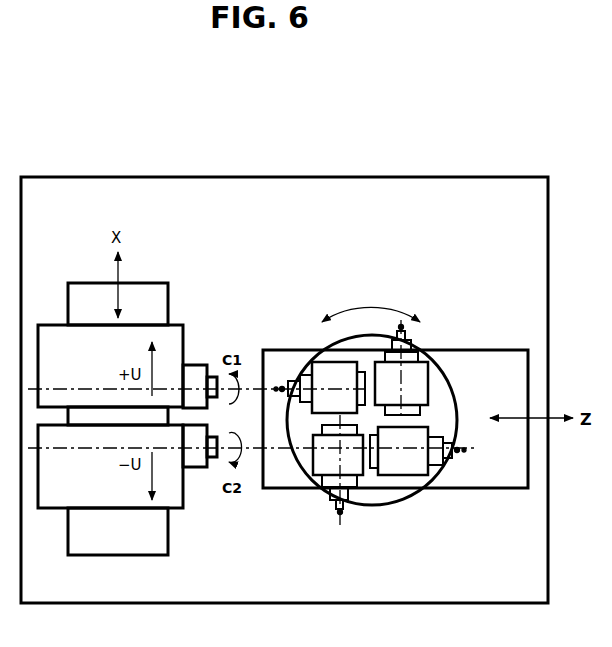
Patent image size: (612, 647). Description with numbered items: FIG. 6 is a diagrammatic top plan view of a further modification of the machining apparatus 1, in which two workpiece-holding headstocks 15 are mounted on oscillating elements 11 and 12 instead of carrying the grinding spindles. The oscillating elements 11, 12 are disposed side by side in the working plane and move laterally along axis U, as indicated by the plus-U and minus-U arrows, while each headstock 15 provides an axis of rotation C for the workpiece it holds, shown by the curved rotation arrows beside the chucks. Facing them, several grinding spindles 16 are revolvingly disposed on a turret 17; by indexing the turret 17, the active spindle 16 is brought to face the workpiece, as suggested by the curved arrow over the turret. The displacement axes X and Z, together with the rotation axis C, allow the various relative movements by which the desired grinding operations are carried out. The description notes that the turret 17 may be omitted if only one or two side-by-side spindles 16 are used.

The machine frame / lathe bed 1 is at (552, 312).
The oscillating element 11 is at (70, 364).
The oscillating element 12 is at (70, 486).
The workpiece-holding headstock 15 is at (190, 368).
The grinding spindle 16 is at (291, 380).
The turret 17 is at (438, 397).